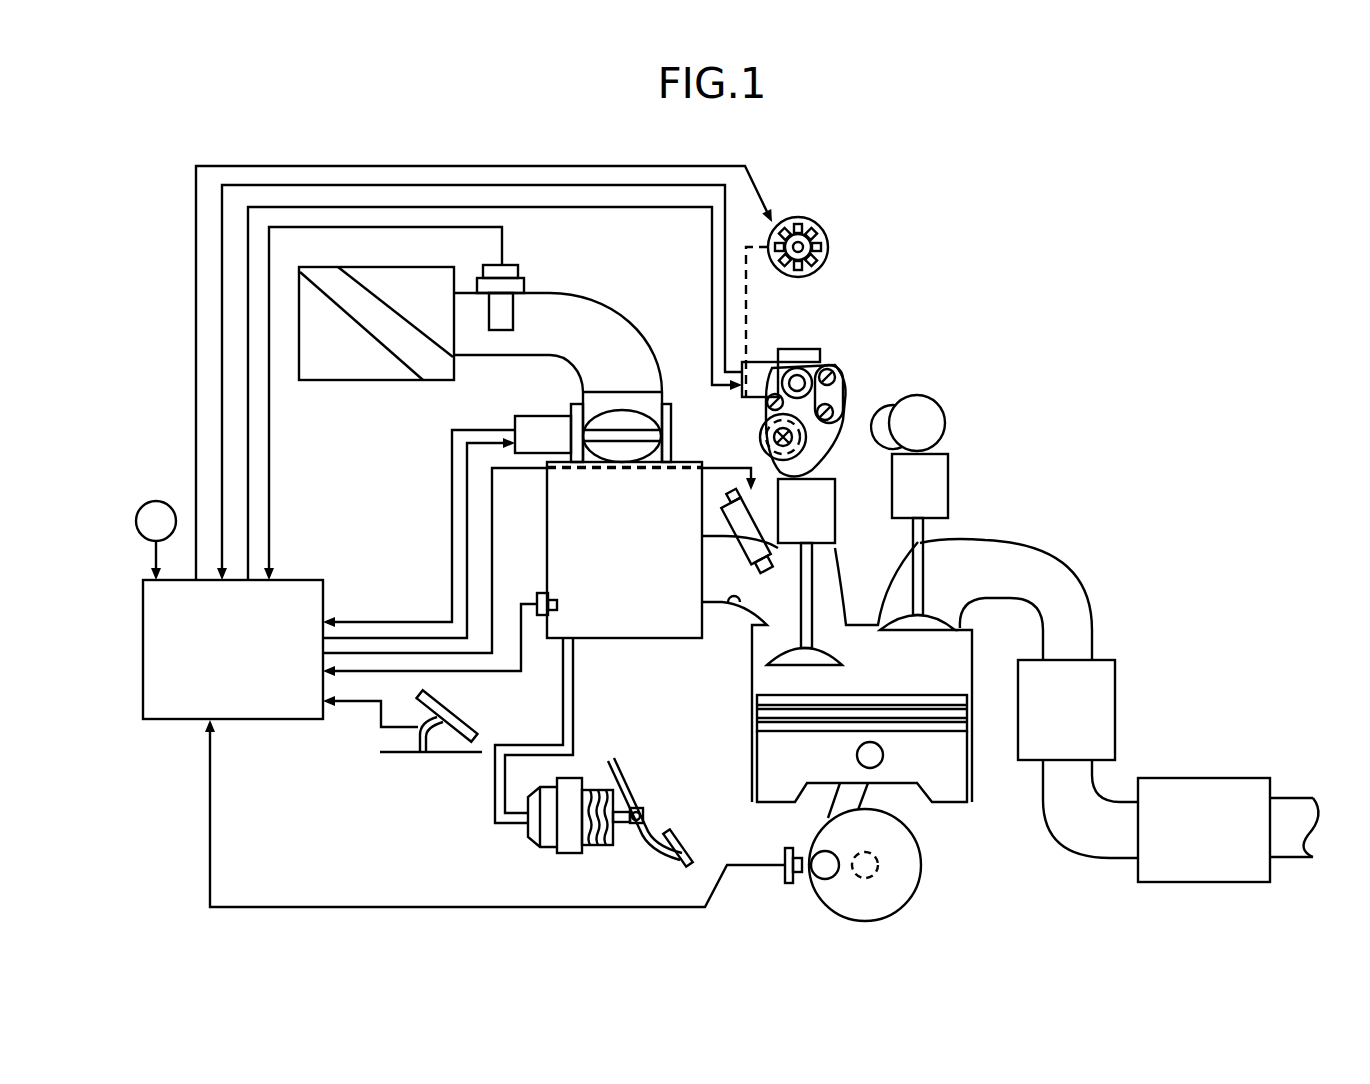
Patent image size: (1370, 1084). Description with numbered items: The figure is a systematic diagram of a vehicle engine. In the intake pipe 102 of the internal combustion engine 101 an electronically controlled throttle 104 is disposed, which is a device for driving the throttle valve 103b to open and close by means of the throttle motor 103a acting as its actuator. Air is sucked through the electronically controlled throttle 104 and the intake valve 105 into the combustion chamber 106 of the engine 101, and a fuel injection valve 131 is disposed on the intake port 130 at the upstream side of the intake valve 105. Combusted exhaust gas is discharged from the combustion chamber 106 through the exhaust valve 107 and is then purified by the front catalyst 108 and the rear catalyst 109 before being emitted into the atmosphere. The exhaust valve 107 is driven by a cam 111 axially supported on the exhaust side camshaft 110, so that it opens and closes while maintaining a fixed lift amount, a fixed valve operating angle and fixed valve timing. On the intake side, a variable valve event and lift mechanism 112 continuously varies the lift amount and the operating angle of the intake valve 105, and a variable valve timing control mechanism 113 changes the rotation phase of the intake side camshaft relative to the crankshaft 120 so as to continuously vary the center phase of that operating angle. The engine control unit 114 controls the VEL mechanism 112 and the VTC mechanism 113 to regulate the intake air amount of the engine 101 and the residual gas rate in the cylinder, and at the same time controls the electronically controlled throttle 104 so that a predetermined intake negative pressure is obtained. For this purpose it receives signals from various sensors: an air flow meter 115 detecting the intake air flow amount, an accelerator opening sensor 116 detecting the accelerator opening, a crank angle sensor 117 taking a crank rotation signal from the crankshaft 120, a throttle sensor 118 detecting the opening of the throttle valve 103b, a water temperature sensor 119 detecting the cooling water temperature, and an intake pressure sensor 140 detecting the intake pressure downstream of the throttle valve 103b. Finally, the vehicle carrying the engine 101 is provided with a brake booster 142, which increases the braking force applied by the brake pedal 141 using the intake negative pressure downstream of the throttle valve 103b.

The internal combustion engine 101 is at (738, 753).
The intake pipe 102 is at (597, 306).
The throttle motor 103a is at (542, 424).
The throttle valve 103b is at (623, 423).
The electronically controlled throttle 104 is at (446, 411).
The intake valve 105 is at (818, 592).
The combustion chamber 106 is at (962, 651).
The exhaust valve 107 is at (920, 540).
The front catalyst 108 is at (1118, 664).
The rear catalyst 109 is at (1242, 777).
The exhaust side camshaft 110 is at (920, 410).
The cam 111 is at (883, 410).
The variable valve event and lift (VEL) mechanism 112 is at (862, 296).
The variable valve timing control (VTC) mechanism 113 is at (832, 214).
The engine control unit 114 is at (170, 720).
The air flow meter 115 is at (507, 274).
The accelerator opening sensor 116 is at (396, 755).
The crank angle sensor 117 is at (779, 880).
The throttle sensor 118 is at (668, 430).
The water temperature sensor 119 is at (146, 505).
The crankshaft 120 is at (880, 853).
The intake port 130 is at (731, 606).
The fuel injection valve 131 is at (742, 522).
The intake pressure sensor 140 is at (537, 595).
The brake pedal 141 is at (685, 842).
The brake booster 142 is at (560, 856).